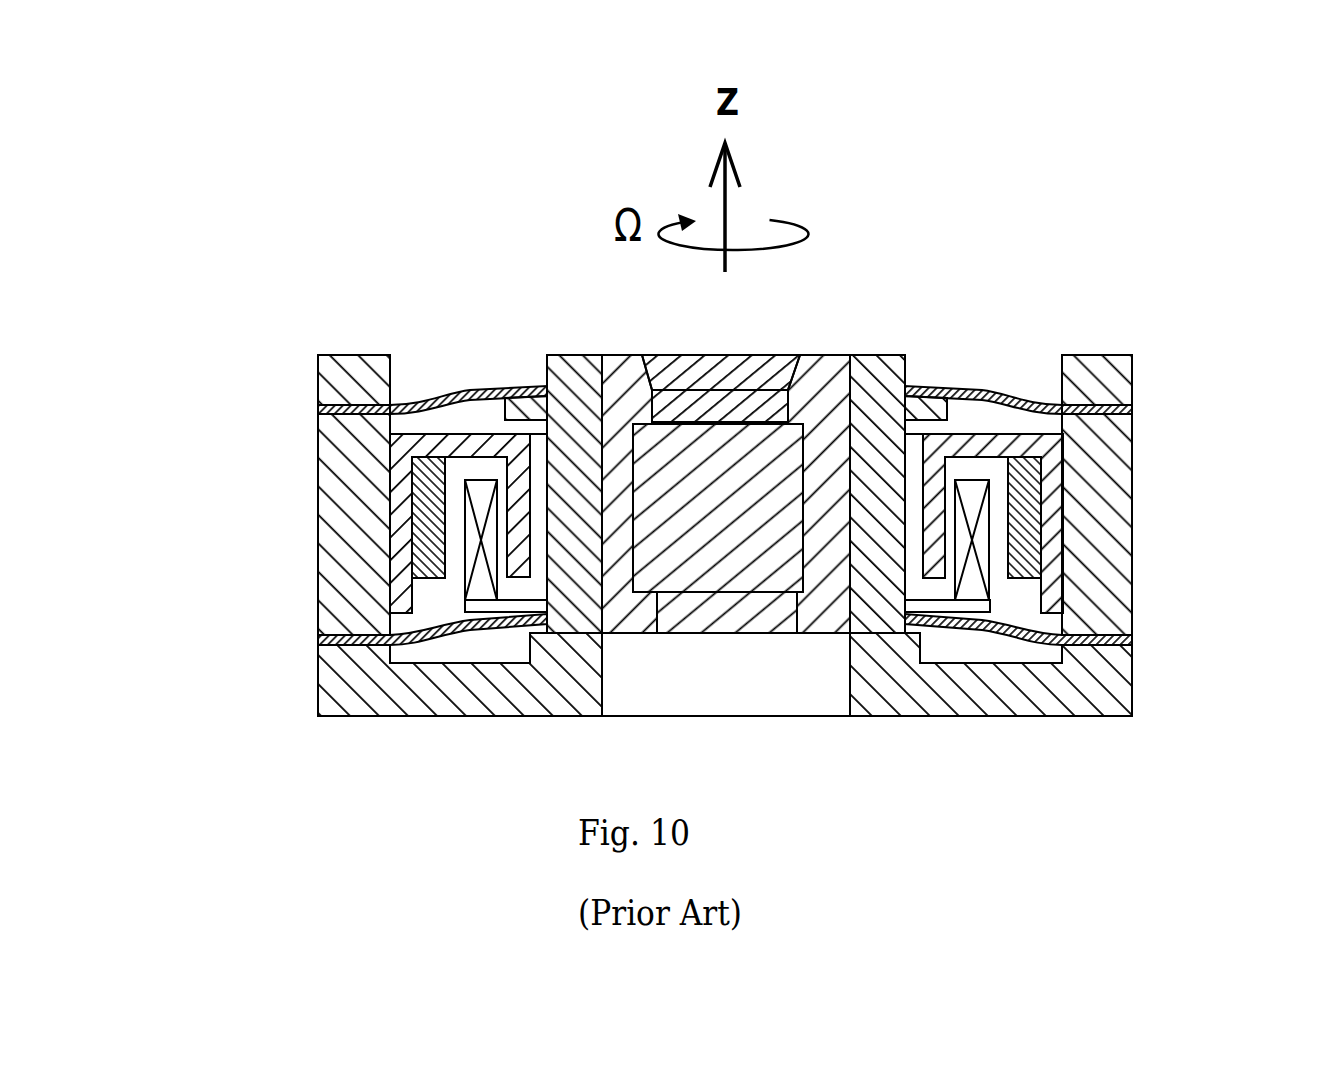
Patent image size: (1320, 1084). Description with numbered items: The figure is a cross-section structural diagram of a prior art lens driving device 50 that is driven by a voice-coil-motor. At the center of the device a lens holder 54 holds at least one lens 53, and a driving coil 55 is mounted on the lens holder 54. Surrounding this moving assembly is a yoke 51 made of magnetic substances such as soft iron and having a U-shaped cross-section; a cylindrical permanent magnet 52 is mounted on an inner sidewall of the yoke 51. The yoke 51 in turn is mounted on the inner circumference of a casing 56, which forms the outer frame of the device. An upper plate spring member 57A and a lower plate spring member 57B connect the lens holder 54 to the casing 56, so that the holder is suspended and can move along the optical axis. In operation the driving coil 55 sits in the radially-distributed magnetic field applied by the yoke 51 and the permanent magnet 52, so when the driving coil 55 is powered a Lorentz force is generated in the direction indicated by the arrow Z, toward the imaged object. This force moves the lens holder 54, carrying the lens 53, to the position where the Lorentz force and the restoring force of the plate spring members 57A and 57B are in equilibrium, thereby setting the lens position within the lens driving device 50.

The lens driving device 50 is at (841, 328).
The yoke 51 is at (1025, 538).
The permanent magnet 52 is at (1062, 535).
The lens 53 is at (697, 360).
The lens holder 54 is at (885, 356).
The driving coil 55 is at (971, 497).
The casing 56 is at (360, 700).
The upper plate spring member 57A is at (455, 392).
The lower plate spring member 57B is at (383, 618).